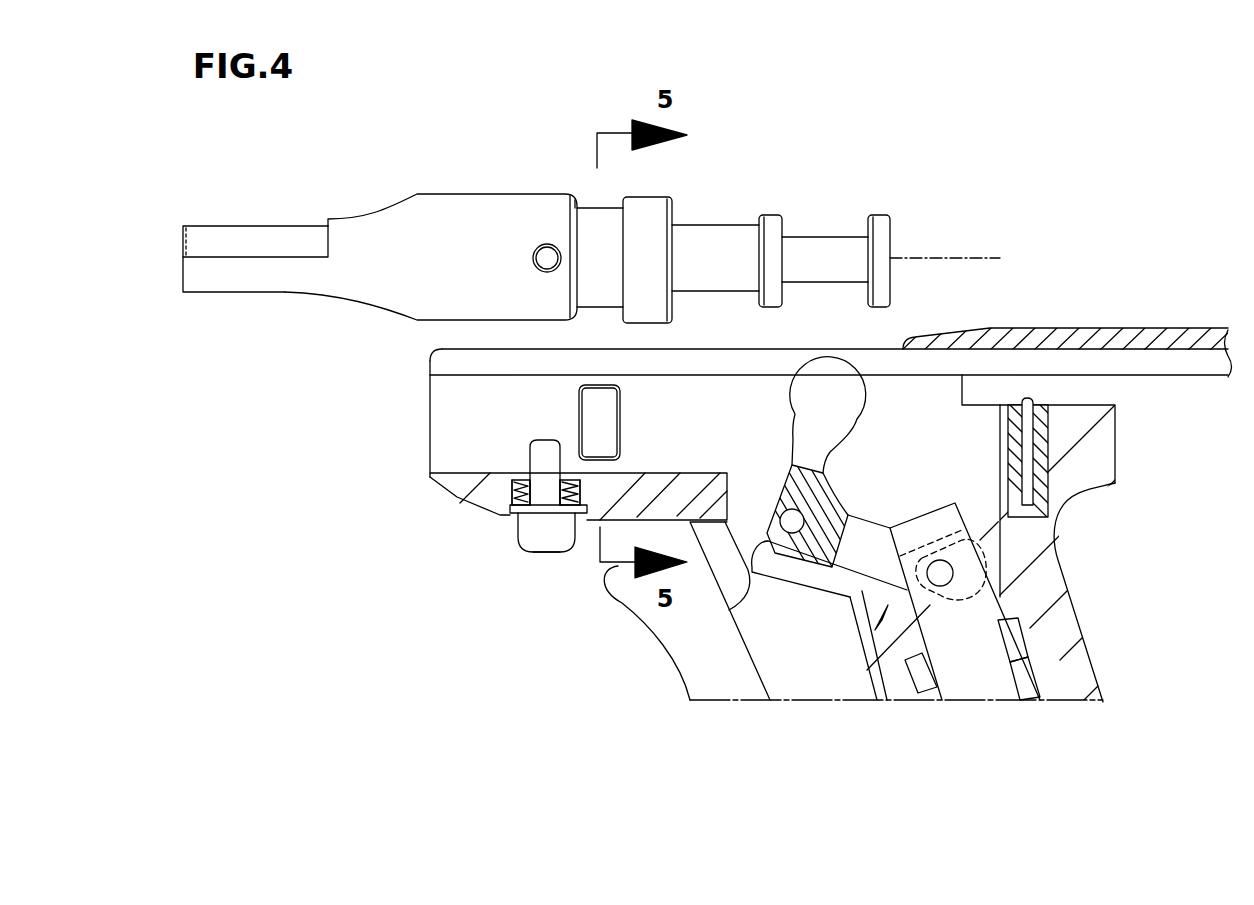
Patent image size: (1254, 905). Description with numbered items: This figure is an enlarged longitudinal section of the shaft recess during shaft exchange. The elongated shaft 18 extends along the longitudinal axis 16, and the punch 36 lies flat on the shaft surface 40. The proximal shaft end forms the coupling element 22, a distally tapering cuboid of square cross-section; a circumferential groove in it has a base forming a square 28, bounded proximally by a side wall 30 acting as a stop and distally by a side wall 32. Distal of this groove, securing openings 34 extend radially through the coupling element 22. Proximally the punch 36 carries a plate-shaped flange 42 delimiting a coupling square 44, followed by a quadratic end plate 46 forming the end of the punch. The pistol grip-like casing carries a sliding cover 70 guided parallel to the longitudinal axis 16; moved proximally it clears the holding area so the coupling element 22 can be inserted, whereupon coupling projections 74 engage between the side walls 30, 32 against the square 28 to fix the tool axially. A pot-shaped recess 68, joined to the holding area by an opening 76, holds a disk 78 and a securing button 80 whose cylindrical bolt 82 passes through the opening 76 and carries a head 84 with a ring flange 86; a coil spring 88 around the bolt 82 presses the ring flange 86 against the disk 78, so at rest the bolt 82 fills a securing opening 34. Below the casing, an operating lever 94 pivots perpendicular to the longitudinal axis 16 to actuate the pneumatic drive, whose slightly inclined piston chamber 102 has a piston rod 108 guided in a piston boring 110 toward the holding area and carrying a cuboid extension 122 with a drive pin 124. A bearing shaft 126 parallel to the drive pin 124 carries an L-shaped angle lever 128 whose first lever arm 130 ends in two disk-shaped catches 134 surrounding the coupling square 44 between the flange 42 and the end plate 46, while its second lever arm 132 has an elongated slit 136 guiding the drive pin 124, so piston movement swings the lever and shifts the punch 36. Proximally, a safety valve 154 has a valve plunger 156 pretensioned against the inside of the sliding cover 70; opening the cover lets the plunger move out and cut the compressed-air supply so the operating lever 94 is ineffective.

The longitudinal axis 16 is at (976, 258).
The shaft 18 is at (287, 294).
The coupling element 22 is at (460, 194).
The square 28 is at (610, 249).
The side wall 30 is at (625, 198).
The side wall 32 is at (598, 207).
The securing openings 34 is at (547, 258).
The punch 36 is at (282, 235).
The shaft surface 40 is at (218, 257).
The flange 42 is at (767, 220).
The coupling square 44 is at (833, 237).
The end plate 46 is at (882, 230).
The recess 68 is at (520, 480).
The sliding cover 70 is at (1075, 330).
The coupling projections 74 is at (612, 417).
The opening 76 is at (552, 462).
The disk 78 is at (503, 513).
The securing button 80 is at (552, 585).
The bolt 82 is at (540, 450).
The head 84 is at (528, 542).
The ring flange 86 is at (500, 506).
The coil spring 88 is at (568, 492).
The operating lever 94 is at (688, 667).
The piston chamber 102 is at (1035, 700).
The piston rod 108 is at (998, 684).
The piston boring 110 is at (997, 620).
The extension 122 is at (960, 523).
The drive pin 124 is at (960, 565).
The bearing shaft 126 is at (737, 603).
The angle lever 128 is at (873, 637).
The first lever arm 130 is at (797, 457).
The second lever arm 132 is at (860, 527).
The catches 134 is at (855, 403).
The slit 136 is at (850, 600).
The safety valve 154 is at (1040, 465).
The valve plunger 156 is at (1030, 425).